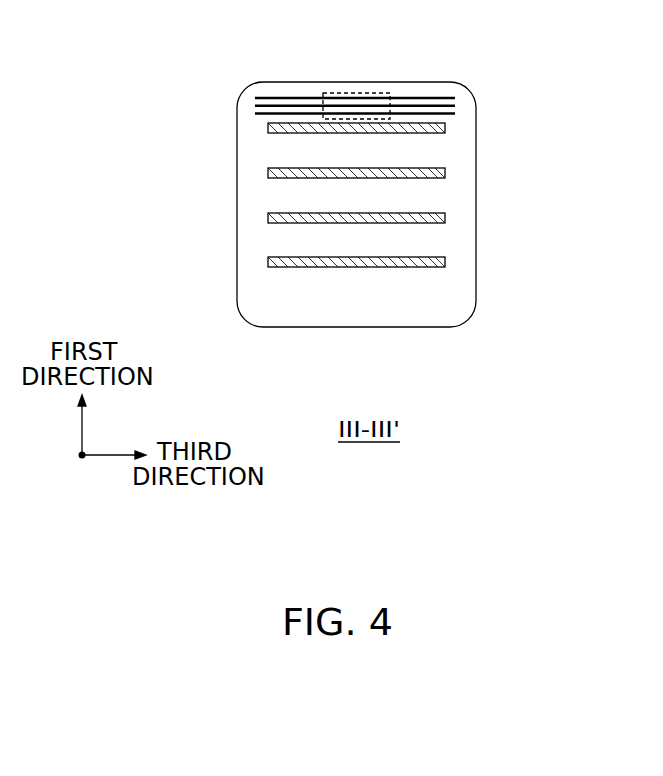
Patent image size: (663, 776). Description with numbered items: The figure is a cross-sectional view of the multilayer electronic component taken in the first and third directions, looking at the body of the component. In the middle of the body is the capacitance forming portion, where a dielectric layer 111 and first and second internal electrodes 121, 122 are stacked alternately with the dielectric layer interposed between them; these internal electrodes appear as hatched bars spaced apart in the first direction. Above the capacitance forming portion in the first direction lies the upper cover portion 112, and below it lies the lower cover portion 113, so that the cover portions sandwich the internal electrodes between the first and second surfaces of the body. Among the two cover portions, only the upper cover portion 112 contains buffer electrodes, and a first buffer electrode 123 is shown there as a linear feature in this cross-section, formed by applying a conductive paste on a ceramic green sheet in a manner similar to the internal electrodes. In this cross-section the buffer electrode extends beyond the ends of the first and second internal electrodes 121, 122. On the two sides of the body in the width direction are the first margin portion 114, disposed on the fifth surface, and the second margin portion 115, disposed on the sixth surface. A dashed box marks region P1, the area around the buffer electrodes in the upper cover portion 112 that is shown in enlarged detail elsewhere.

The dielectric layer 111 is at (440, 148).
The upper cover portion 112 is at (308, 92).
The lower cover portion 113 is at (351, 313).
The first margin portion 114 is at (245, 232).
The second margin portion 115 is at (470, 235).
The first internal electrode 121 is at (445, 127).
The second internal electrode 122 is at (445, 170).
The first buffer electrode 123 is at (437, 97).
The region P1 is at (380, 93).